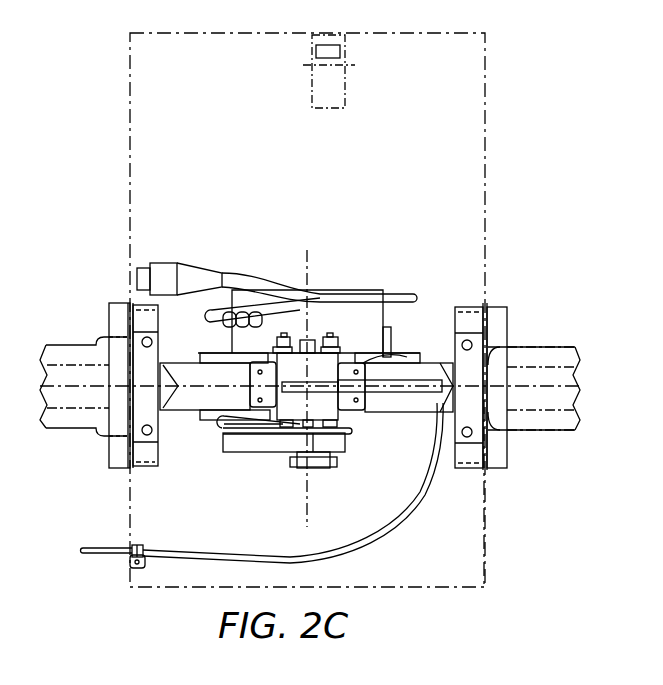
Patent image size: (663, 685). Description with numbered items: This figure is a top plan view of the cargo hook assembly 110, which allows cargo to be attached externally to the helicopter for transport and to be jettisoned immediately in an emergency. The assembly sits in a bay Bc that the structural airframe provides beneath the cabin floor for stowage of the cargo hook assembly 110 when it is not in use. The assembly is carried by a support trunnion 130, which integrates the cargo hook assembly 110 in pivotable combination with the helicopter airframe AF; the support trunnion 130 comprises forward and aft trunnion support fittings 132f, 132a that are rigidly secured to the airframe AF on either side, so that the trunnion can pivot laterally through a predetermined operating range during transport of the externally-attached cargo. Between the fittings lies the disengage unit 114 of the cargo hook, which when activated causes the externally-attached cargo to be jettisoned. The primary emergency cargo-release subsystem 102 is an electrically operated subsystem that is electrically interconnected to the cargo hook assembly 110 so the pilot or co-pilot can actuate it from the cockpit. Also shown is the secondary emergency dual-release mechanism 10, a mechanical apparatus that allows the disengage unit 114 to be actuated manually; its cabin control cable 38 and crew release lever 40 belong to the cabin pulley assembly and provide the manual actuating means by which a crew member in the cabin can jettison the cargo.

The cargo hook assembly 110 is at (387, 176).
The primary emergency cargo-release subsystem 102 is at (287, 278).
The disengage unit 114 is at (352, 323).
The forward trunnion support fitting 132f is at (140, 300).
The aft trunnion support fitting 132a is at (470, 310).
The crew release lever 40 is at (386, 378).
The emergency dual-release mechanism 10 is at (348, 402).
The cabin control cable 38 is at (316, 440).
The support trunnion 130 is at (180, 414).
The airframe AF is at (112, 420).
The bay Bc is at (489, 522).